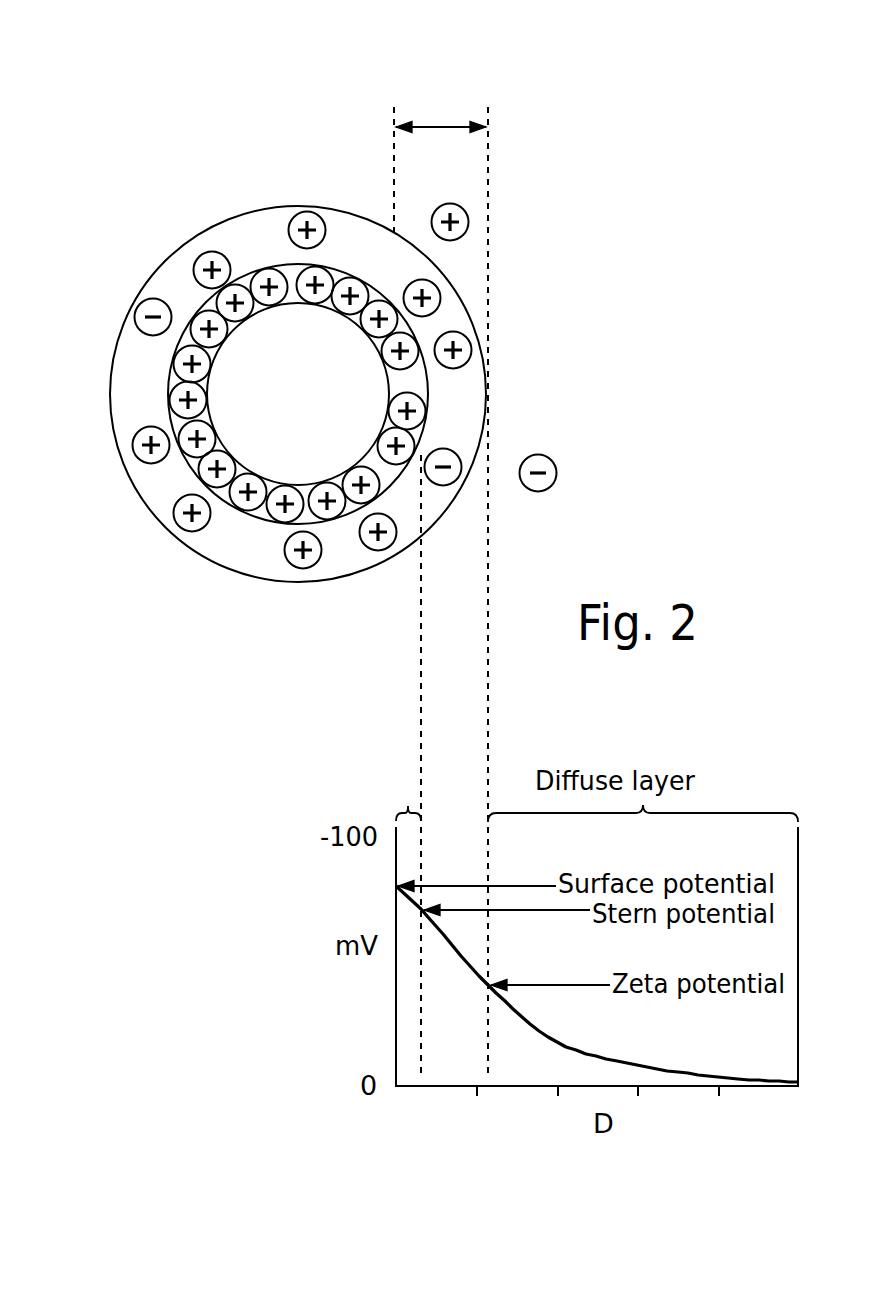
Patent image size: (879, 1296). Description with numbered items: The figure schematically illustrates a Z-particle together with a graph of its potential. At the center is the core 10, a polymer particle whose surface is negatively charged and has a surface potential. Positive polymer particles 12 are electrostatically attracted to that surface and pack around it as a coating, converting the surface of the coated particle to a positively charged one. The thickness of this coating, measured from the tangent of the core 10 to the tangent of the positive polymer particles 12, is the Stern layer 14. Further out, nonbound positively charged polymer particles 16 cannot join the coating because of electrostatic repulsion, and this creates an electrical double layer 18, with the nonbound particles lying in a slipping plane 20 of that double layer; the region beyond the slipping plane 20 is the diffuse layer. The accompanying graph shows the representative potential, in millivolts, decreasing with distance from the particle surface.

The core 10 is at (333, 390).
The positive polymer particles 12 is at (265, 283).
The Stern layer 14 is at (407, 802).
The nonbound positively charged polymer particles 16 is at (153, 306).
The electrical double layer 18 is at (441, 122).
The slipping plane 20 is at (457, 315).